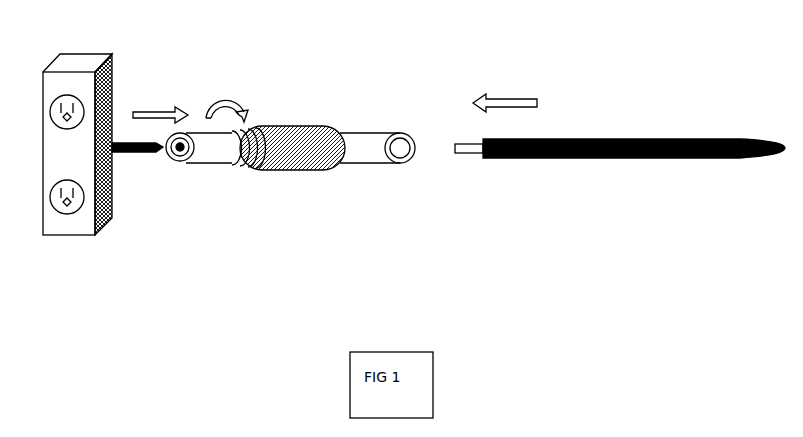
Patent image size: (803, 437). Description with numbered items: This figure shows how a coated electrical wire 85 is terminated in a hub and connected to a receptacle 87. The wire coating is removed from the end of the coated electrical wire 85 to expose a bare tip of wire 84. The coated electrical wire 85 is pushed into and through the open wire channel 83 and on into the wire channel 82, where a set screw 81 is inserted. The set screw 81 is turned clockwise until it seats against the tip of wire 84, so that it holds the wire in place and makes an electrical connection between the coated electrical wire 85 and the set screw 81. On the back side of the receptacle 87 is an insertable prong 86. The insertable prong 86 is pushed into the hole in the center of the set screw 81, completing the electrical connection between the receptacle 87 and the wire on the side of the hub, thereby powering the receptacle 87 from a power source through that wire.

The set screw 81 is at (218, 162).
The wire channel 82 is at (325, 122).
The open wire channel 83 is at (383, 166).
The tip of wire 84 is at (470, 158).
The coated electrical wire 85 is at (587, 130).
The insertable prong 86 is at (127, 152).
The receptacle 87 is at (68, 240).